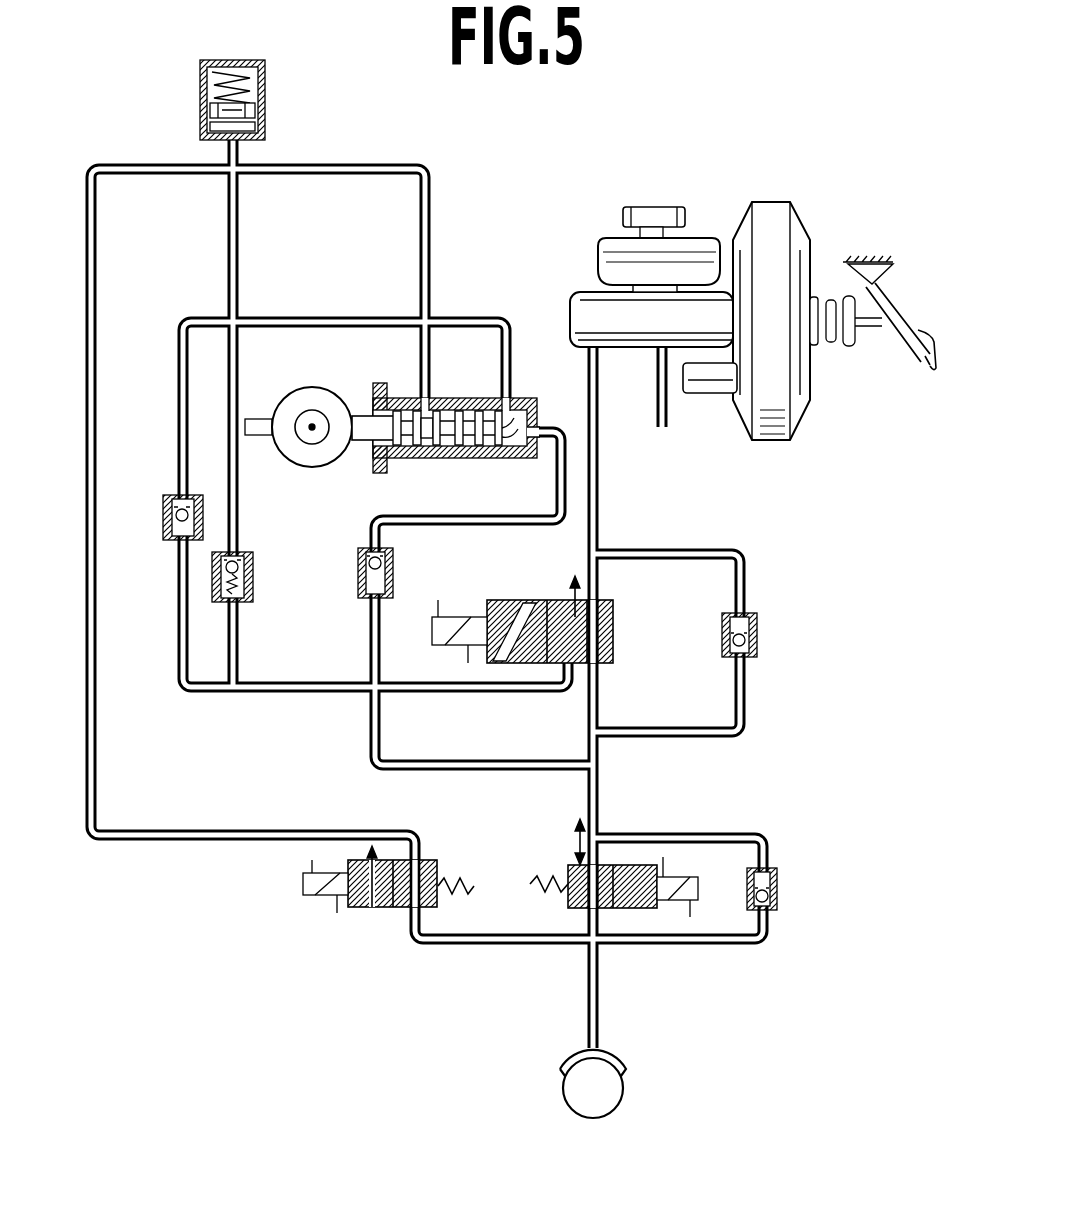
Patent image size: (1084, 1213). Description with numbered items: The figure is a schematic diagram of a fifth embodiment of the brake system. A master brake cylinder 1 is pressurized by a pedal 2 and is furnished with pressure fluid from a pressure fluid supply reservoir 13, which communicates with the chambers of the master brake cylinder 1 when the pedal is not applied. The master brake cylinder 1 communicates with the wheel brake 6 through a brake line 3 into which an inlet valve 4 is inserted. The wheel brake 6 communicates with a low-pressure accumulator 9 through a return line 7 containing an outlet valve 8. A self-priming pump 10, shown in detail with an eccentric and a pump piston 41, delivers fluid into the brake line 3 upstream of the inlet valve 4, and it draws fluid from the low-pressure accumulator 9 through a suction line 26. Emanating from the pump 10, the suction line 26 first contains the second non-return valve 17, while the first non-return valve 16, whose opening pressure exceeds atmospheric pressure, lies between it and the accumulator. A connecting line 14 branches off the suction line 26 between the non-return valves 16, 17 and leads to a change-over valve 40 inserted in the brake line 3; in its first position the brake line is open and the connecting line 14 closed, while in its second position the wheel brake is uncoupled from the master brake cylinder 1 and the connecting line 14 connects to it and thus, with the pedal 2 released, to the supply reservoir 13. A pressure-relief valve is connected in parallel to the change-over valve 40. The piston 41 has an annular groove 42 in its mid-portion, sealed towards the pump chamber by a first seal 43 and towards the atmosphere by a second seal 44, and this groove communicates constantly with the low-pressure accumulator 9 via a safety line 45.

The master brake cylinder 1 is at (642, 353).
The pedal 2 is at (930, 365).
The brake line 3 is at (599, 446).
The inlet valve 4 is at (568, 870).
The wheel brake 6 is at (607, 1094).
The return line 7 is at (253, 830).
The outlet valve 8 is at (438, 862).
The low-pressure accumulator 9 is at (266, 96).
The self-priming pump 10 is at (392, 419).
The pressure fluid supply reservoir 13 is at (605, 245).
The connecting line 14 is at (423, 696).
The first non-return valve 16 is at (254, 573).
The second non-return valve 17 is at (164, 547).
The suction line 26 is at (484, 317).
The change-over valve 40 is at (546, 600).
The pump piston 41 is at (503, 457).
The annular groove 42 is at (426, 456).
The first seal 43 is at (460, 460).
The second seal 44 is at (392, 460).
The safety line 45 is at (422, 257).